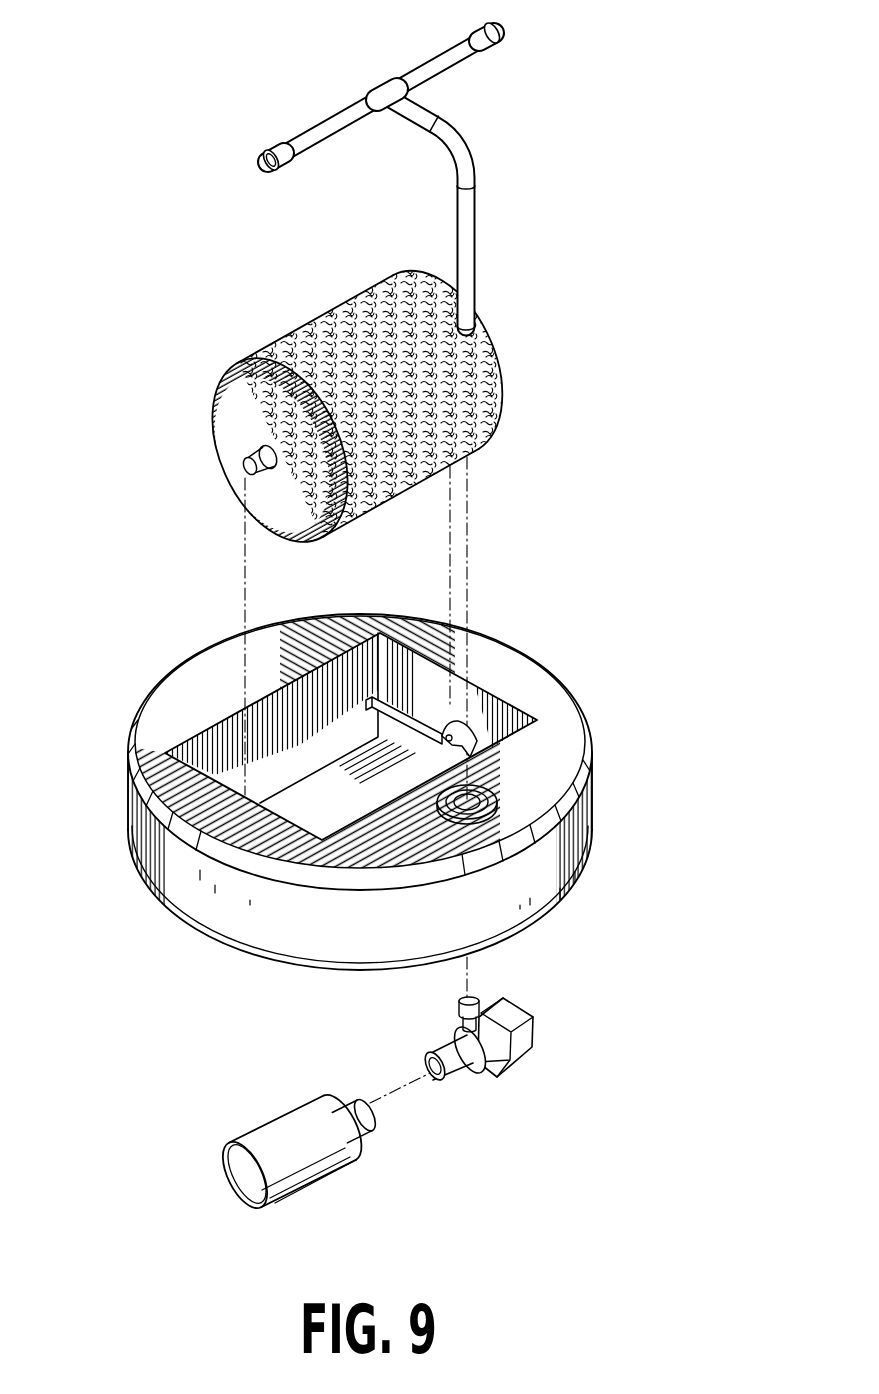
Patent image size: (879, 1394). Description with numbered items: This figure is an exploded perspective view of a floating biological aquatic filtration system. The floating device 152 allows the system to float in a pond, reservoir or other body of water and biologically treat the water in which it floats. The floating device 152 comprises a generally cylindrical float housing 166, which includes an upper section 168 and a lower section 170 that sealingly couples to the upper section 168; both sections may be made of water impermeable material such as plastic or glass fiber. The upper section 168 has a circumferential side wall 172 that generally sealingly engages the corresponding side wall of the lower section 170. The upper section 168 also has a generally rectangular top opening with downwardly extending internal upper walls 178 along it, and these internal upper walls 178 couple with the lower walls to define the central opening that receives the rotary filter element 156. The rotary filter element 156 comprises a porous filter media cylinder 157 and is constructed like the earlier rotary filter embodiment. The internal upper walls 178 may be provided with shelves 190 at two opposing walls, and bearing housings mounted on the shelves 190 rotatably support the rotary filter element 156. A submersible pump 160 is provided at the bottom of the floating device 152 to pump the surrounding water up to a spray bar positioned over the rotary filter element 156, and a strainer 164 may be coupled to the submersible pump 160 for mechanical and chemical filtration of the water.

The floating device 152 is at (363, 779).
The rotary filter element 156 is at (317, 321).
The porous filter media cylinder 157 is at (469, 449).
The submersible pump 160 is at (534, 1032).
The strainer 164 is at (327, 1094).
The float housing 166 is at (193, 727).
The upper section 168 is at (597, 833).
The lower section 170 is at (541, 911).
The circumferential side wall 172 is at (228, 914).
The internal upper walls 178 is at (307, 693).
The shelves 190 is at (401, 730).